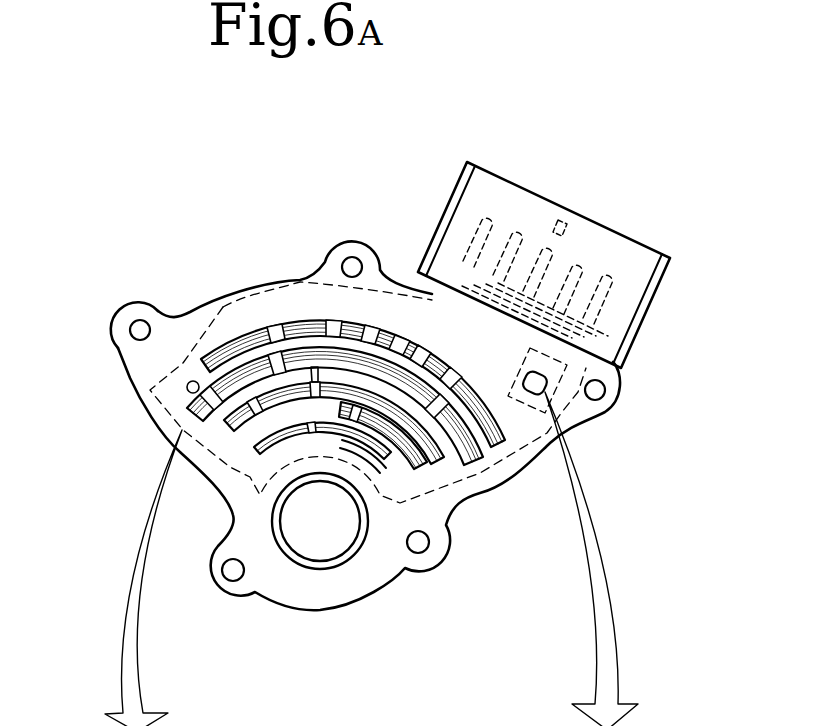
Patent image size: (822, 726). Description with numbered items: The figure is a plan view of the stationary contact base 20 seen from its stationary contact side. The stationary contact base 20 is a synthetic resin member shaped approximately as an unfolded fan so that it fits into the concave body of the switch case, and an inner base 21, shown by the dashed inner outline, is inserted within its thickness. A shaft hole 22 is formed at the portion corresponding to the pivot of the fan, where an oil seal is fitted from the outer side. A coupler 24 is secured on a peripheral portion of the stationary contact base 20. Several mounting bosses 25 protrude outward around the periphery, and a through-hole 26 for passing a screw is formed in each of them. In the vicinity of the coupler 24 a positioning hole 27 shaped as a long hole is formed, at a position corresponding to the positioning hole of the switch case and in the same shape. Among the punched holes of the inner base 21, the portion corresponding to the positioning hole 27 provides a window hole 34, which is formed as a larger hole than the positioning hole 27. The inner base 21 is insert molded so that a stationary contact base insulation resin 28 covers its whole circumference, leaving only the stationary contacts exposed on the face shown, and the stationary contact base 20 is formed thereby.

The stationary contact base 20 is at (192, 266).
The inner base 21 is at (148, 388).
The shaft hole 22 is at (340, 548).
The coupler 24 is at (633, 241).
The mounting boss 25 is at (116, 338).
The through-hole 26 is at (139, 321).
The positioning hole 27 is at (541, 391).
The stationary contact base insulation resin 28 is at (300, 287).
The window hole 34 is at (540, 412).